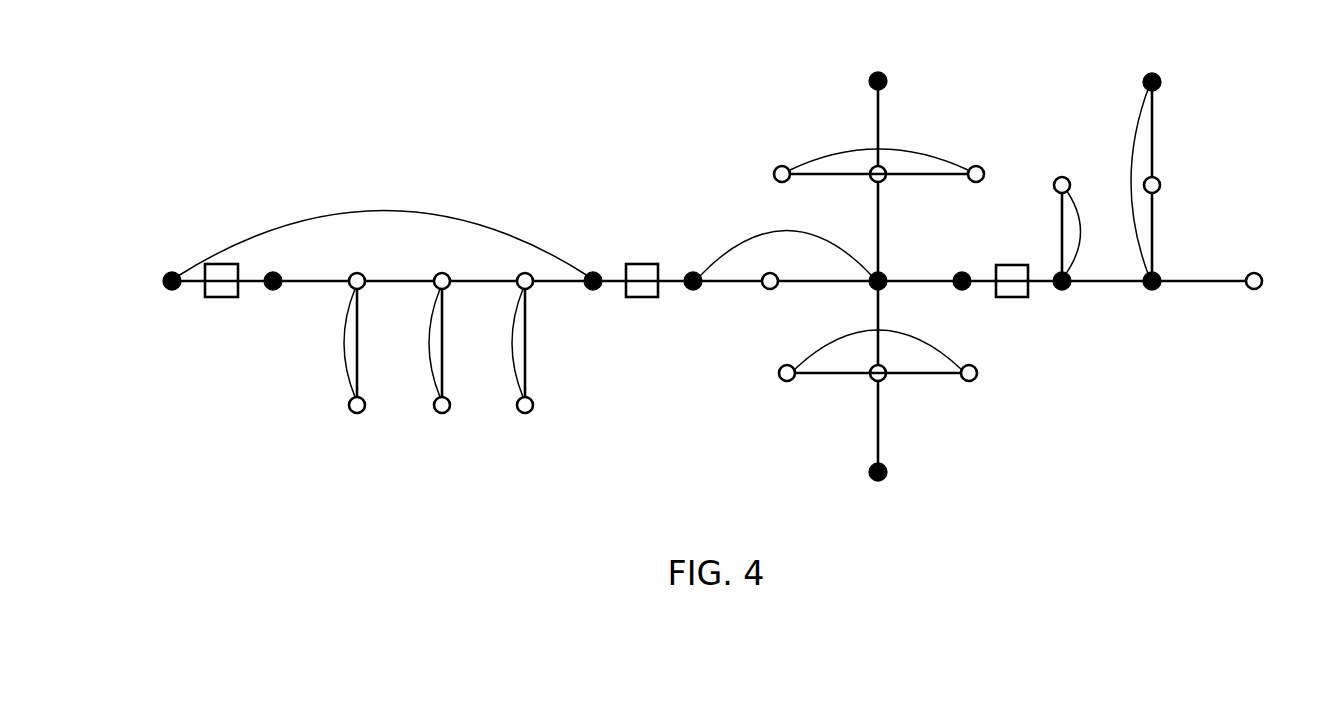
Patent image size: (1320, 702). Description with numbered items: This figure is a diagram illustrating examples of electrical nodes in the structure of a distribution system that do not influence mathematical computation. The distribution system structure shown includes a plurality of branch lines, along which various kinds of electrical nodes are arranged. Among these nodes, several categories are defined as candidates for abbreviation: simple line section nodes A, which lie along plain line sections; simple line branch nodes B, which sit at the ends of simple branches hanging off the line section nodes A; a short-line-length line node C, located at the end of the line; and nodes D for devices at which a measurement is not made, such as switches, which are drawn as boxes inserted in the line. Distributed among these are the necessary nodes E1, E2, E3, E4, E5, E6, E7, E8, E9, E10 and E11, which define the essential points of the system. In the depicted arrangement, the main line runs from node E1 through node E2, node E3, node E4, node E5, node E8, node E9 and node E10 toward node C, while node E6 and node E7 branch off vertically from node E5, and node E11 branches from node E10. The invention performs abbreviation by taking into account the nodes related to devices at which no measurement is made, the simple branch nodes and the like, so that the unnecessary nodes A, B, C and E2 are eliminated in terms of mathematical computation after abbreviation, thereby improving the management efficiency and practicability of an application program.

The necessary node E1 is at (163, 308).
The necessary node E2 is at (276, 308).
The necessary node E3 is at (390, 278).
The necessary node E4 is at (686, 303).
The necessary node E5 is at (810, 261).
The necessary node E6 is at (866, 58).
The necessary node E7 is at (866, 497).
The necessary node E8 is at (955, 302).
The necessary node E9 is at (1064, 266).
The necessary node E10 is at (1162, 210).
The necessary node E11 is at (1152, 157).
The simple line section node A is at (764, 285).
The simple line branch node B is at (715, 295).
The short-line-length line node C is at (1254, 296).
The node for a device at which a measurement is not made D is at (616, 271).